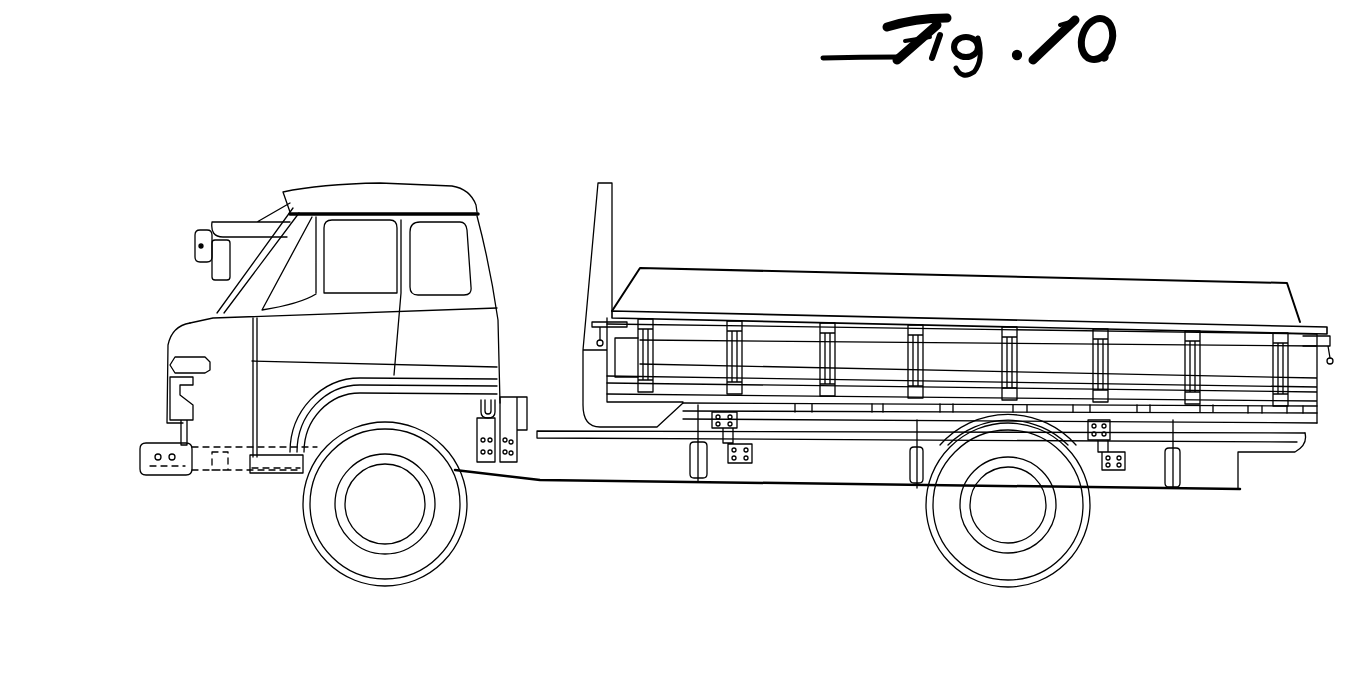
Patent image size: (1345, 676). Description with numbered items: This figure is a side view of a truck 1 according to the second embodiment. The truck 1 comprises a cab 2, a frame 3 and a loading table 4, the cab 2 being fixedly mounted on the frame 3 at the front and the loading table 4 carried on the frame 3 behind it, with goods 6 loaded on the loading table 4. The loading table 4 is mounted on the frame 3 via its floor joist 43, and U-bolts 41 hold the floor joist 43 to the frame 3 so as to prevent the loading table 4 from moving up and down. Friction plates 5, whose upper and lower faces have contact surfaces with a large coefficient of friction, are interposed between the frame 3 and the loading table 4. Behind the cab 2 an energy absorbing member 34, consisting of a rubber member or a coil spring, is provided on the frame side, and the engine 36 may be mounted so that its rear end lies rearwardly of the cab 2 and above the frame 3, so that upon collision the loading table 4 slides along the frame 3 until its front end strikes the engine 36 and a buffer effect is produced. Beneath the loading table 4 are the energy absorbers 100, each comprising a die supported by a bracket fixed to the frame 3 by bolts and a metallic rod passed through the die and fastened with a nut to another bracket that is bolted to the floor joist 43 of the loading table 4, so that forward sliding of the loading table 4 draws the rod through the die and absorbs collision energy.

The truck 1 is at (958, 305).
The cab 2 is at (382, 190).
The frame 3 is at (877, 470).
The loading table 4 is at (970, 352).
The friction plate 5 is at (633, 434).
The goods 6 is at (1047, 282).
The energy absorbing member 34 is at (522, 413).
The engine 36 is at (507, 398).
The U-bolt 41 is at (690, 465).
The floor joist 43 is at (1217, 434).
The energy absorber 100 is at (736, 468).